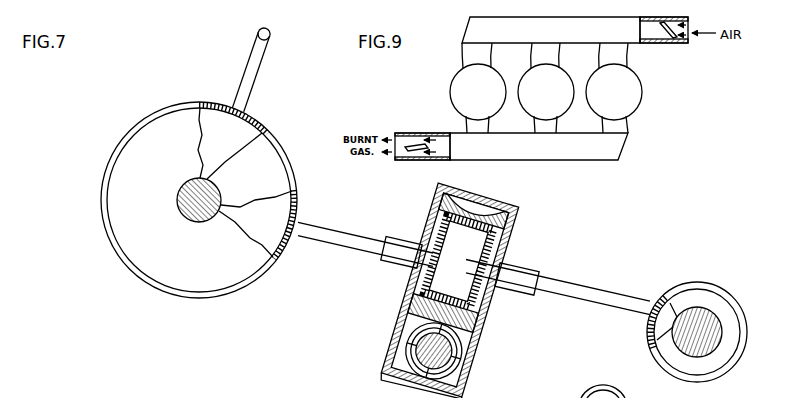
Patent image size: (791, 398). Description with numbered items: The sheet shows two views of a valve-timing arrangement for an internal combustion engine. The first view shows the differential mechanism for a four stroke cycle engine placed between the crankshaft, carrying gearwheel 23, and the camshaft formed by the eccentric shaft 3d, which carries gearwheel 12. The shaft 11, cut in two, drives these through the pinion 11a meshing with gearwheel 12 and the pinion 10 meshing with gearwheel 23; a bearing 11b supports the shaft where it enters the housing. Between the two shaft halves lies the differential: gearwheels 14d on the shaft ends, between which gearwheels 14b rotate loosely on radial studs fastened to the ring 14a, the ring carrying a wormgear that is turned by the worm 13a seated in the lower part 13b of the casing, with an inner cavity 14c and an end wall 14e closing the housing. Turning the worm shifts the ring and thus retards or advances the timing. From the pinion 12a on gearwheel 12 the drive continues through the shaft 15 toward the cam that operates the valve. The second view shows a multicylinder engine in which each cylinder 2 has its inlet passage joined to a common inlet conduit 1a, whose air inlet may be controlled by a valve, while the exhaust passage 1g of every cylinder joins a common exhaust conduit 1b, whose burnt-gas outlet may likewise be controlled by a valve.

In FIG. 7, the gearwheel 12 is at (98, 188).
In FIG. 7, the pinion 12a is at (254, 118).
In FIG. 7, the eccentric shaft 3d is at (213, 164).
In FIG. 7, the shaft 15 is at (258, 82).
In FIG. 9, the shaft 15 is at (530, 59).
In FIG. 7, the shaft 11 is at (341, 228).
In FIG. 7, the pinion 11a is at (489, 307).
In FIG. 7, the bearing 11b is at (406, 281).
In FIG. 7, the ring 14a is at (496, 212).
In FIG. 7, the gearwheels 14b is at (506, 233).
In FIG. 7, the cavity 14c is at (473, 246).
In FIG. 7, the gearwheel 14d is at (410, 299).
In FIG. 7, the upper differential element 14e is at (398, 322).
In FIG. 7, the worm 13a is at (470, 360).
In FIG. 7, the base plate 13b is at (464, 396).
In FIG. 7, the pinion 10 is at (654, 300).
In FIG. 7, the gearwheel on the crankshaft 23 is at (723, 321).
In FIG. 9, the common inlet conduit 1a is at (657, 45).
In FIG. 9, the common exhaust conduit 1b is at (434, 132).
In FIG. 9, the exhaust passage 1g is at (489, 126).
In FIG. 9, the cylinder 2 is at (546, 92).